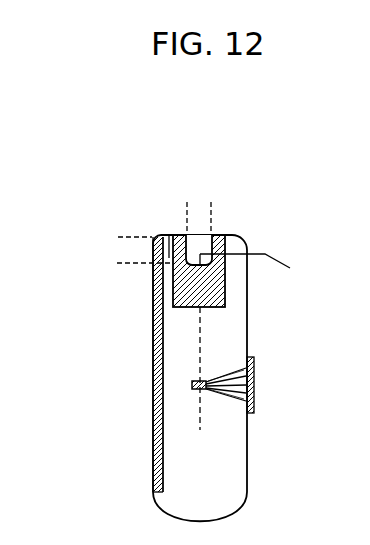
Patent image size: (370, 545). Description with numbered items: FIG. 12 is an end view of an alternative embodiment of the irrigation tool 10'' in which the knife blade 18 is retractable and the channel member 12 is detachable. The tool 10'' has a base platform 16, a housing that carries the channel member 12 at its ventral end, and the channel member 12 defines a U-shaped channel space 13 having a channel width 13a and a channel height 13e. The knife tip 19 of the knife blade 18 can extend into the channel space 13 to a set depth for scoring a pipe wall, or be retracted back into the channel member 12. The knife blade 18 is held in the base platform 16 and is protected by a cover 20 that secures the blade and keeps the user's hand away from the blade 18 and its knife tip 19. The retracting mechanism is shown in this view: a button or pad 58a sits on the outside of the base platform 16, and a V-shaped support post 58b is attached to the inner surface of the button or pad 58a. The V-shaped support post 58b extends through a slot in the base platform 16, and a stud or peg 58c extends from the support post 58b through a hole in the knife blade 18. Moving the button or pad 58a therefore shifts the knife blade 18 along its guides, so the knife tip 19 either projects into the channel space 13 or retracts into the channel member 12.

The tool 10'' is at (139, 319).
The channel member 12 is at (183, 282).
The channel space 13 is at (200, 246).
The channel width 13a is at (198, 208).
The channel height 13e is at (133, 252).
The base platform 16 is at (210, 477).
The knife blade 18 is at (200, 354).
The knife tip 19 is at (254, 275).
The cover 20 is at (153, 421).
The button or pad 58a is at (254, 383).
The V-shaped support post 58b is at (206, 381).
The stud or peg 58c is at (197, 386).